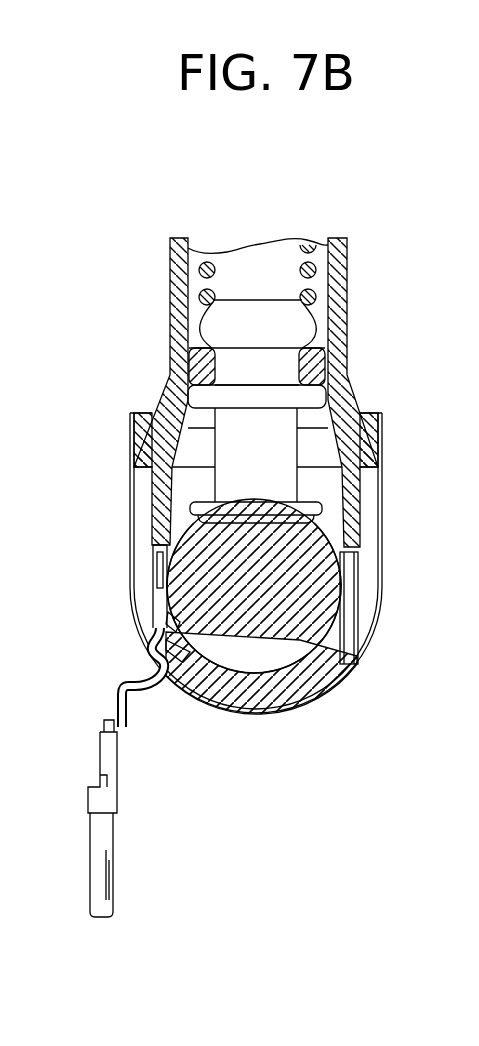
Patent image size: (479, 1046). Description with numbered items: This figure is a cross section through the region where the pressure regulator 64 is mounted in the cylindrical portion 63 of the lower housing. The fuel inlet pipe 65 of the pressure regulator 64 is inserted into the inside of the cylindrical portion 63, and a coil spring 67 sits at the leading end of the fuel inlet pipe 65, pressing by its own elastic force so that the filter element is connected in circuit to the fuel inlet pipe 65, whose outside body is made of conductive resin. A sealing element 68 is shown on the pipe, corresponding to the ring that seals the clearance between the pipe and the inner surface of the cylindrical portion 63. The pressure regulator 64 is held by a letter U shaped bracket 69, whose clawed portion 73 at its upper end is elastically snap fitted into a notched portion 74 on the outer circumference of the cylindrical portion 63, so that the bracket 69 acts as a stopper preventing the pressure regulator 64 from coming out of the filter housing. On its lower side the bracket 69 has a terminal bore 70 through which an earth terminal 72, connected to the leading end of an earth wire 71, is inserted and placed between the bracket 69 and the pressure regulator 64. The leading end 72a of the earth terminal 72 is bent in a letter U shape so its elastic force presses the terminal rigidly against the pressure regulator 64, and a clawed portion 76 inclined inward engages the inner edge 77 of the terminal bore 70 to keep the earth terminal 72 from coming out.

The cylindrical portion 63 is at (172, 305).
The pressure regulator 64 is at (320, 582).
The fuel inlet pipe 65 is at (290, 327).
The coil spring 67 is at (180, 255).
The sealing element 68 is at (347, 380).
The bracket 69 is at (263, 713).
The terminal bore 70 is at (153, 663).
The earth wire 71 is at (115, 860).
The earth terminal 72 is at (153, 598).
The leading end 72a is at (153, 563).
The clawed portion 73 is at (382, 453).
The notched portion 74 is at (381, 478).
The clawed portion 76 is at (177, 625).
The inner edge 77 is at (180, 647).